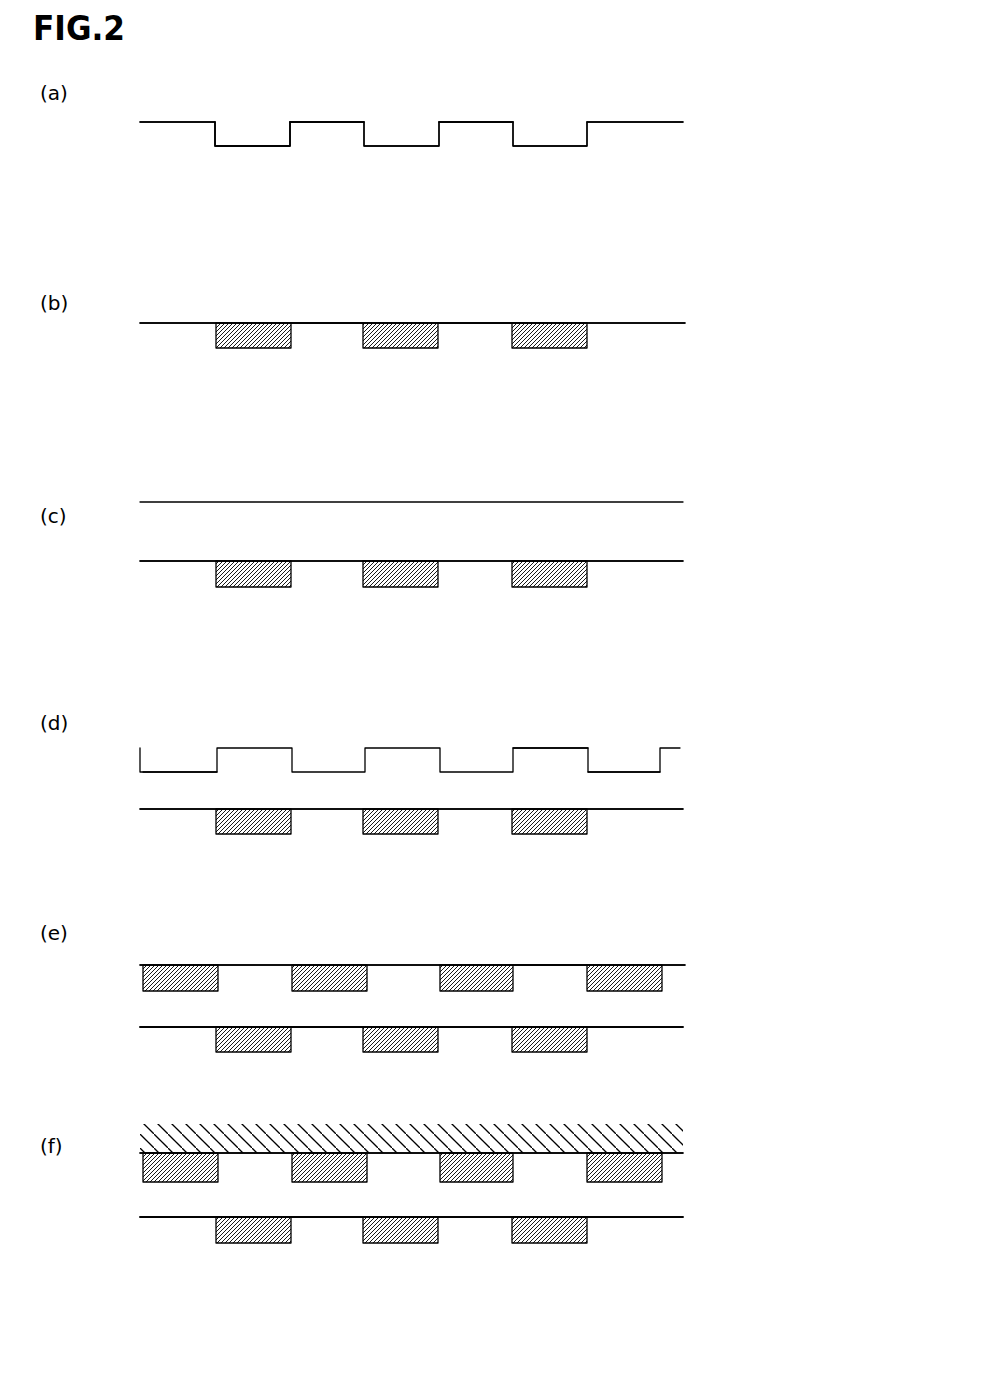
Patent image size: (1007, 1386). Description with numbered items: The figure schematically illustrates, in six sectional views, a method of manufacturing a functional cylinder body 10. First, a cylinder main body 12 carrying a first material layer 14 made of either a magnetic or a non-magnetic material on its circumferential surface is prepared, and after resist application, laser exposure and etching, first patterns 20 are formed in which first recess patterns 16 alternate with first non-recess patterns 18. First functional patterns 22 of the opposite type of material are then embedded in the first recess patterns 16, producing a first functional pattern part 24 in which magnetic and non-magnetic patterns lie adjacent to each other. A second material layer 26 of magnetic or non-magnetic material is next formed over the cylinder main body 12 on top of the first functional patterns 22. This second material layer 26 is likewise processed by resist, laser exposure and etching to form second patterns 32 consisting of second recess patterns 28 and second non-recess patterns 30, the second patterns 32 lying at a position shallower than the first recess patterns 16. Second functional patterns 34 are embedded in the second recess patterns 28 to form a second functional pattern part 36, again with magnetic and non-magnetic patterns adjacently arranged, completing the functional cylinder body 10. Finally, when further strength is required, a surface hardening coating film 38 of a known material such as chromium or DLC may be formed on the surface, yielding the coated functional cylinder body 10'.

The functional cylinder body 10 is at (474, 996).
The functional cylinder body 10' is at (485, 1164).
The cylinder main body 12 is at (638, 121).
The first material layer 14 is at (660, 132).
The first recess patterns 16 is at (252, 147).
The first non-recess patterns 18 is at (336, 120).
The first patterns 20 is at (255, 130).
The first functional patterns 22 is at (258, 329).
The first functional pattern part 24 is at (643, 368).
The second material layer 26 is at (683, 510).
The second recess patterns 28 is at (618, 772).
The second non-recess patterns 30 is at (562, 747).
The second patterns 32 is at (180, 760).
The second functional patterns 34 is at (178, 972).
The second functional pattern part 36 is at (683, 980).
The surface hardening coating film 38 is at (687, 1142).